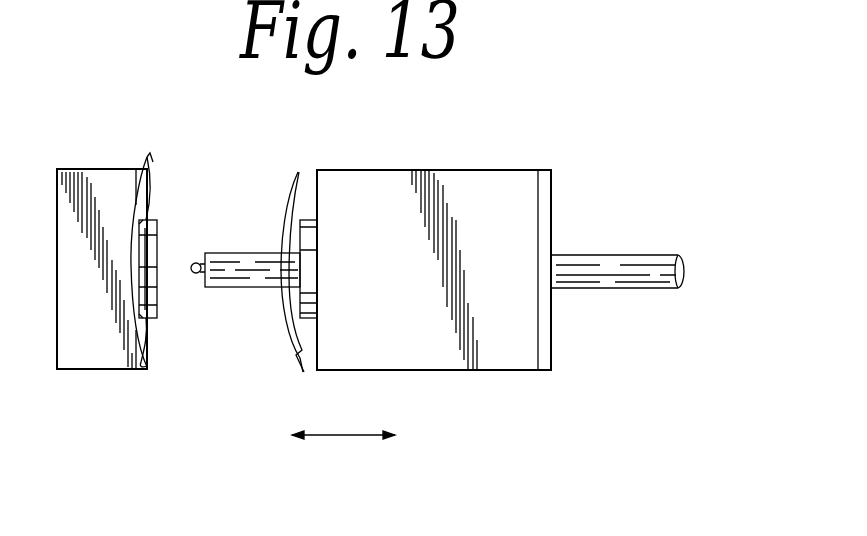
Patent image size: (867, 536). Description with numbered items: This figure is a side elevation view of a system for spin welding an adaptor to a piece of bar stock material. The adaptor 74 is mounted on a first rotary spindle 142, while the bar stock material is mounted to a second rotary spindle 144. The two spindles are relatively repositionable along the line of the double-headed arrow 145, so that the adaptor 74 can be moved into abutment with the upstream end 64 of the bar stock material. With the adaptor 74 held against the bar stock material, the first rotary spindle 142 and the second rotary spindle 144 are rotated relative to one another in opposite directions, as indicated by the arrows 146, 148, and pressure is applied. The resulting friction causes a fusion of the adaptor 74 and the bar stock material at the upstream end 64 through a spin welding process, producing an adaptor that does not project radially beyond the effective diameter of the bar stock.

The first rotary spindle 142 is at (160, 227).
The arrow 146 is at (143, 337).
The upstream end 64 is at (205, 286).
The adaptor 74 is at (197, 262).
The arrow 148 is at (283, 303).
The second rotary spindle 144 is at (308, 240).
The double-headed arrow 145 is at (340, 437).